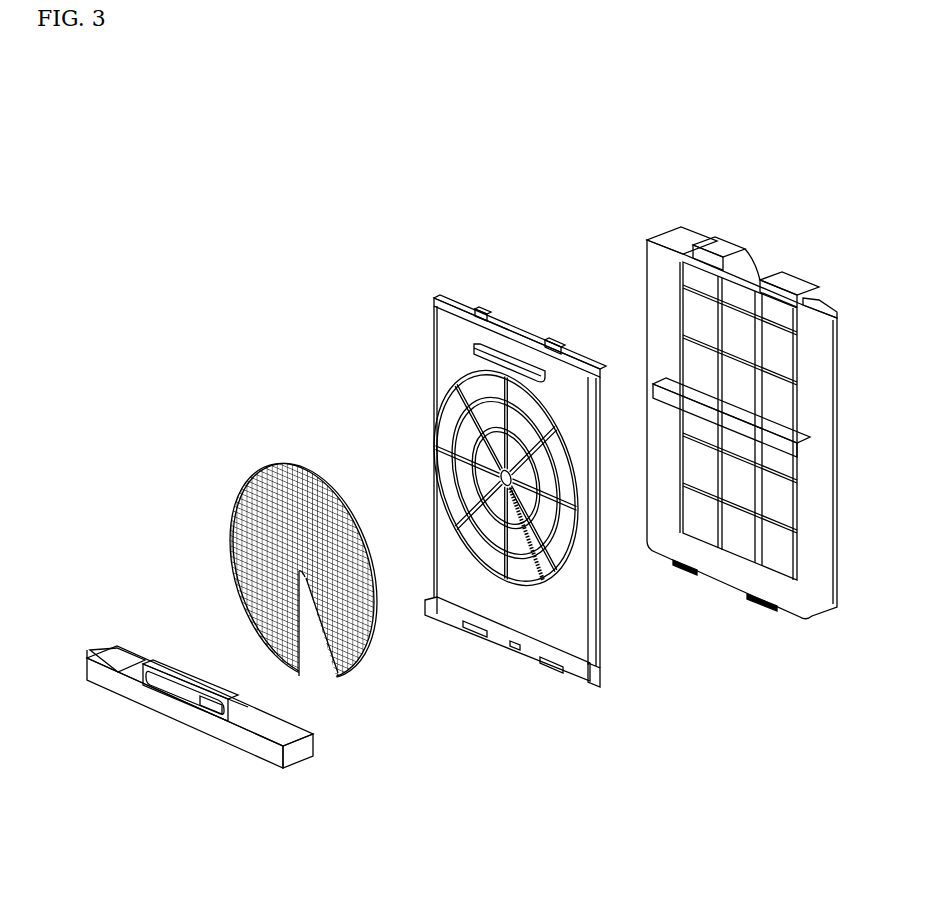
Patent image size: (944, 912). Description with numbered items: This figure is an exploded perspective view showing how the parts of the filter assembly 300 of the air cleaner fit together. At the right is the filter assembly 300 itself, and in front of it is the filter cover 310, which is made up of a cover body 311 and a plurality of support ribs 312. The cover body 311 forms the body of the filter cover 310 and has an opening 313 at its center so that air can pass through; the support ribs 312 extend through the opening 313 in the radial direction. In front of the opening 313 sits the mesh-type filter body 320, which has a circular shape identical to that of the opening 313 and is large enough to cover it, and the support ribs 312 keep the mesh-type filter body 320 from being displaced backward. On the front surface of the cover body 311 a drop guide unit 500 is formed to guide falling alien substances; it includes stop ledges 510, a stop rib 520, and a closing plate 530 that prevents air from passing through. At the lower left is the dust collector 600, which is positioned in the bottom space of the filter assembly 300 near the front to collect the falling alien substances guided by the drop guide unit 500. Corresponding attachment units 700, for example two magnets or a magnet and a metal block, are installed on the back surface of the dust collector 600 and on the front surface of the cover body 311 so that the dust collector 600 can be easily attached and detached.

The filter assembly 300 is at (765, 230).
The filter cover 310 is at (440, 268).
The cover body 311 is at (507, 347).
The support ribs 312 is at (450, 420).
The opening 313 is at (450, 470).
The mesh-type filter body 320 is at (270, 432).
The drop guide unit 500 is at (455, 718).
The stop ledges 510 is at (530, 580).
The stop rib 520 is at (510, 570).
The closing plate 530 is at (520, 567).
The dust collector 600 is at (103, 615).
The attachment units 700 is at (205, 703).